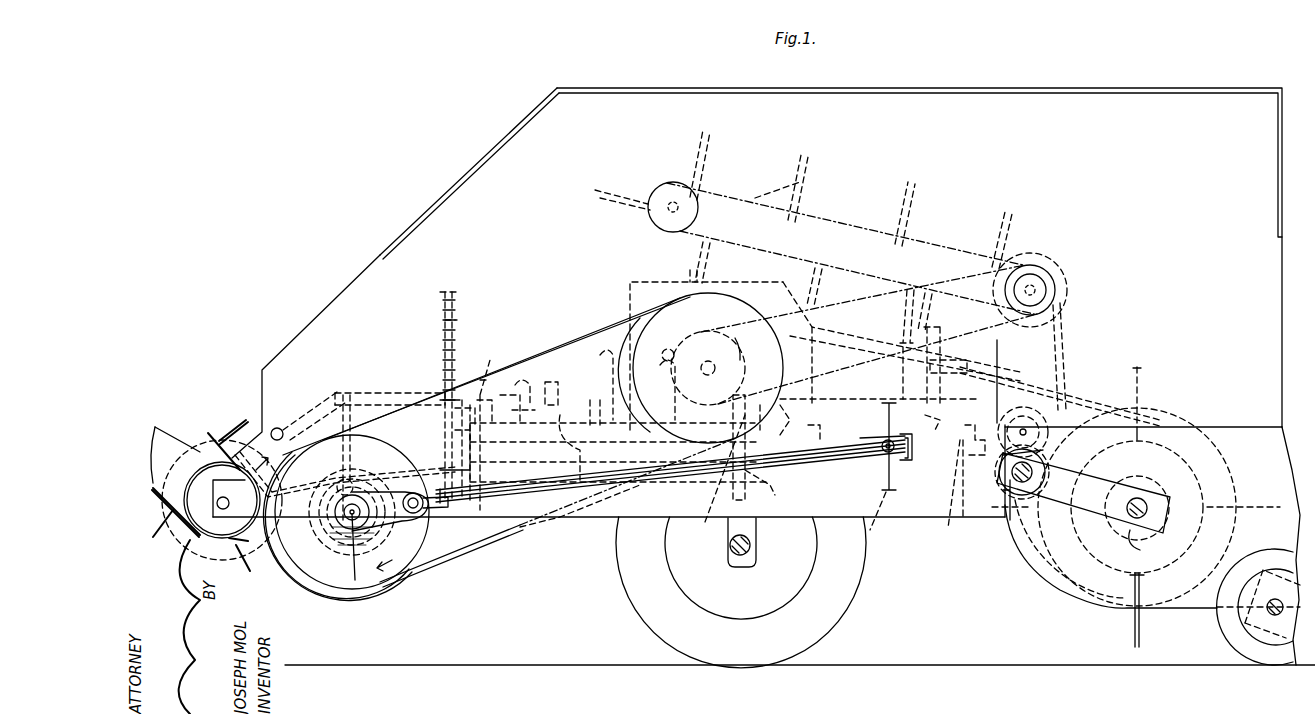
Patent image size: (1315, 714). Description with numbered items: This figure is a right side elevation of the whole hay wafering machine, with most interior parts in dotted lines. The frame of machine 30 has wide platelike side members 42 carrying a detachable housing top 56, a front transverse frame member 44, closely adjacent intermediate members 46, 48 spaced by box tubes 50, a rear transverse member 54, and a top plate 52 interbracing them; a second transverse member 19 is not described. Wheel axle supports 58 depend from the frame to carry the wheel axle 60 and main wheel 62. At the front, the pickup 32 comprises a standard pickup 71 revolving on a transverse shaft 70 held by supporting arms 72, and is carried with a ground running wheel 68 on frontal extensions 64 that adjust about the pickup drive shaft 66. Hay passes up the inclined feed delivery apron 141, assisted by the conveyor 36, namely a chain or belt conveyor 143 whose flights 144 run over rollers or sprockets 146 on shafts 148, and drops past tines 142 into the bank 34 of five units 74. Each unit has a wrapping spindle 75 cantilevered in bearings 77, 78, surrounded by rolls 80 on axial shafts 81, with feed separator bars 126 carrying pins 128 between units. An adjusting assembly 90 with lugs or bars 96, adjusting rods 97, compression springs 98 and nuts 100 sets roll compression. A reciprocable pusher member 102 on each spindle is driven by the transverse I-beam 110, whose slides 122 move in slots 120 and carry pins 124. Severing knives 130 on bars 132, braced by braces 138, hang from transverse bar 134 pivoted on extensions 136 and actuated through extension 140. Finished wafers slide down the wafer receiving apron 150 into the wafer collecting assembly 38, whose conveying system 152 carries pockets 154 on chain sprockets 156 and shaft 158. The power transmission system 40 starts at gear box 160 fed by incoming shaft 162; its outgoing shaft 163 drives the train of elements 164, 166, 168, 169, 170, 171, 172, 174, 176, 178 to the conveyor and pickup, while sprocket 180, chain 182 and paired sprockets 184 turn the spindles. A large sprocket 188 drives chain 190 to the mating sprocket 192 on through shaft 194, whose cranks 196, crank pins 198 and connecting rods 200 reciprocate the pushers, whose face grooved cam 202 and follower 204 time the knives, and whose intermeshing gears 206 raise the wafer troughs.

The support member 19 is at (960, 470).
The frame of machine 30 is at (451, 176).
The pickup 32 is at (1096, 584).
The bank of hay roll forming and wafer making units 34 is at (676, 480).
The conveyor 36 is at (915, 255).
The wafer collecting assembly 38 is at (218, 418).
The power transmission system 40 is at (628, 280).
The side members of the frame 42 is at (976, 140).
The front transversely extending frame member 44 is at (950, 492).
The intermediate transverse frame member 46 is at (758, 480).
The intermediate transverse frame member 48 is at (716, 479).
The box shaped tubes 50 is at (746, 396).
The top longitudinally extending plate 52 is at (866, 399).
The rear transversely extending frame member 54 is at (484, 380).
The top of the housing 56 is at (920, 90).
The wheel axle supports 58 is at (757, 556).
The wheel axle 60 is at (734, 551).
The main wheel 62 is at (848, 590).
The frontal extensions of the side frame members 64 is at (1226, 427).
The pickup drive shaft 66 is at (1022, 480).
The pickup ground running wheel 68 is at (1217, 636).
The transverse shaft 70 is at (1145, 500).
The standard pickup 71 is at (1140, 380).
The supporting arms 72 is at (1165, 522).
The longitudinally extending units 74 is at (560, 425).
The wrapping spindles 75 is at (540, 458).
The antifriction bearing 77 is at (765, 417).
The antifriction bearing 78 is at (976, 429).
The feeding and forming and firming rolls 80 is at (548, 400).
The axial shafts 81 is at (450, 430).
The adjusting assembly 90 is at (448, 413).
The lugs or bars 96 is at (455, 390).
The adjusting rods 97 is at (447, 298).
The compression springs 98 is at (458, 320).
The adjusting nuts 100 is at (458, 306).
The reciprocable member 102 is at (812, 440).
The I-beam 110 is at (882, 470).
The slots 120 is at (855, 438).
The slides 122 is at (915, 461).
The pin like extensions 124 is at (880, 455).
The feed separator supporting bars 126 is at (598, 415).
The pins 128 is at (612, 358).
The wafer severing knives or saws 130 is at (520, 386).
The knife supporting bars 132 is at (382, 392).
The transversely extending bar or beam 134 is at (352, 392).
The out turned extensions 136 is at (280, 427).
The transversely extending braces 138 is at (418, 392).
The downwardly extending extension 140 is at (314, 416).
The hay feed delivery apron 141 is at (1022, 382).
The downwardly inclined tines 142 is at (706, 330).
The chain or belt conveyor 143 is at (733, 190).
The flights of the conveyor 144 is at (805, 178).
The rollers or sprockets 146 is at (700, 208).
The roller or sprocket bearing shafts 148 is at (668, 192).
The wafer receiving apron 150 is at (322, 520).
The wafer conveying system 152 is at (192, 425).
The wafer receiving conveyor pockets 154 is at (236, 420).
The chain sprockets 156 is at (178, 468).
The chain sprocket bearing shaft 158 is at (240, 487).
The gear box 160 is at (672, 280).
The incoming shaft connection 162 is at (950, 342).
The outgoing power shaft 163 is at (765, 362).
The power transmitting element 164 is at (663, 352).
The sprocket 166 is at (850, 300).
The power transmitting element 168 is at (1032, 255).
The power transmitting element 169 is at (1062, 318).
The power transmitting element 170 is at (1070, 337).
The power transmitting element 171 is at (1028, 432).
The power transmitting element 172 is at (1046, 411).
The power transmitting element 174 is at (1050, 450).
The power transmitting element 176 is at (1046, 470).
The power transmitting element 178 is at (1149, 543).
The sprocket 180 is at (930, 330).
The transversely extending chain 182 is at (932, 387).
The hub connected sprockets 184 is at (937, 415).
The large diameter sprocket 188 is at (633, 318).
The power transmitting chain 190 is at (555, 345).
The mating sprocket 192 is at (440, 556).
The through running power shaft 194 is at (355, 580).
The cranks 196 is at (410, 515).
The crank pins 198 is at (449, 503).
The connecting rods 200 is at (553, 517).
The face grooved cam 202 is at (350, 520).
The cam follower 204 is at (342, 480).
The intermeshing gears 206 is at (288, 572).